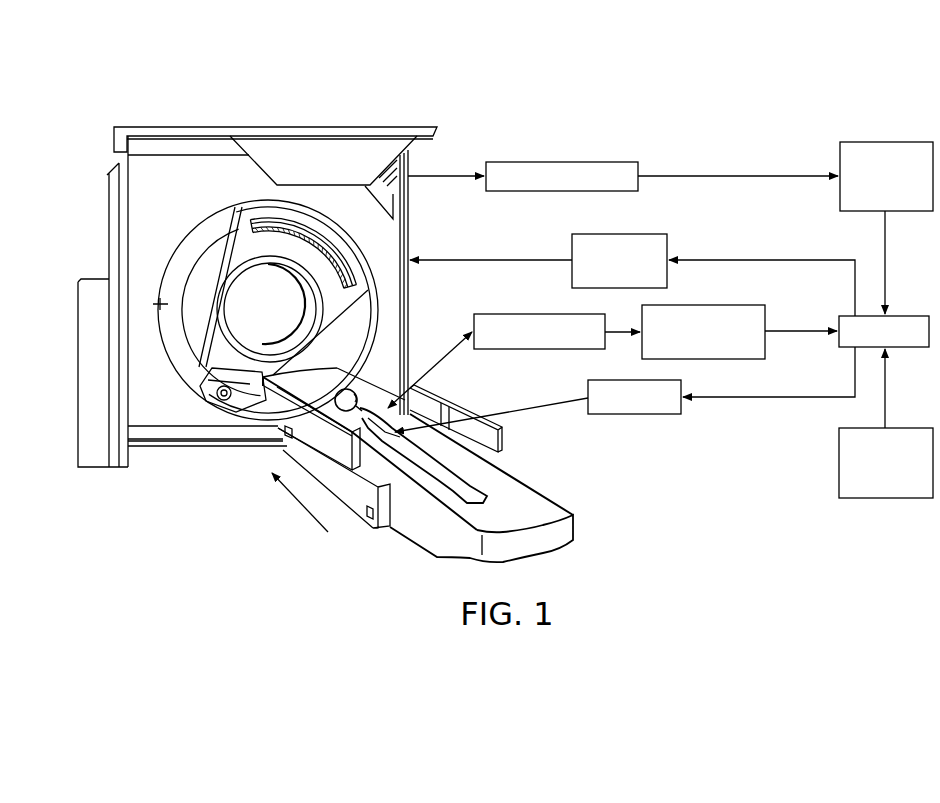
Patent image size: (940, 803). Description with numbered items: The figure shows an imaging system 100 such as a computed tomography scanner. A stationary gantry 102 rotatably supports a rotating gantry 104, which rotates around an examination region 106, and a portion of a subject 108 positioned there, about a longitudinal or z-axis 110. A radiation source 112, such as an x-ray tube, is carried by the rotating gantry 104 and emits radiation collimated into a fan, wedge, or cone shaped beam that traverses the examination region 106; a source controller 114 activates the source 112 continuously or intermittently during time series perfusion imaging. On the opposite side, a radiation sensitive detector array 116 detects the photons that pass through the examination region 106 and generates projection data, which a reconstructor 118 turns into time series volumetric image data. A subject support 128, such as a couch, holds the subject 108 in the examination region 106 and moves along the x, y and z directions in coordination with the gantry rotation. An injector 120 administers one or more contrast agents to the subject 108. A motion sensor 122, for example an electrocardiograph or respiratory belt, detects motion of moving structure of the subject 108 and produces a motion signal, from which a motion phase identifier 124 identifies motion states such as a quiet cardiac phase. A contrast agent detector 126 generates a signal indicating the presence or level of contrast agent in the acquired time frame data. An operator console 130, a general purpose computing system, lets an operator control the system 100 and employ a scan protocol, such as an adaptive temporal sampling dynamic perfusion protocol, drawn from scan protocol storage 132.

The imaging system 100 is at (150, 92).
The stationary gantry 102 is at (137, 236).
The rotating gantry 104 is at (250, 243).
The examination region 106 is at (246, 308).
The subject 108 is at (453, 490).
The longitudinal or z-axis 110 is at (316, 518).
The radiation source 112 is at (223, 400).
The source controller 114 is at (572, 245).
The radiation sensitive detector array 116 is at (352, 257).
The reconstructor 118 is at (620, 162).
The injector 120 is at (664, 414).
The motion sensor 122 is at (531, 349).
The motion phase identifier 124 is at (762, 313).
The contrast agent detector 126 is at (840, 154).
The subject support 128 is at (537, 507).
The operator console 130 is at (918, 320).
The scan protocol storage 132 is at (840, 445).